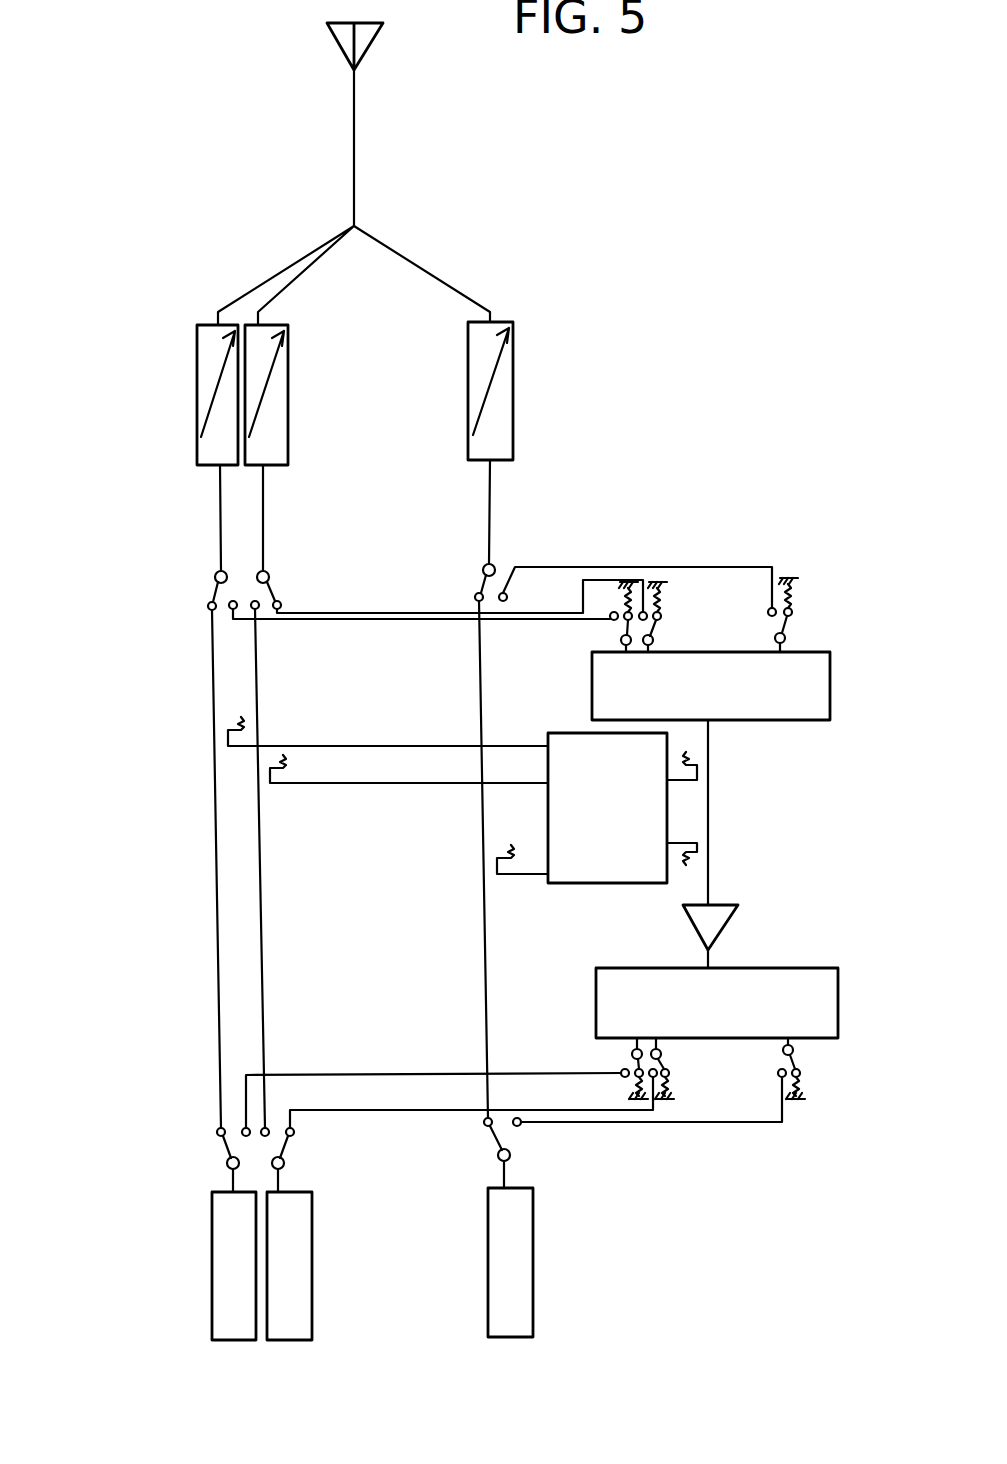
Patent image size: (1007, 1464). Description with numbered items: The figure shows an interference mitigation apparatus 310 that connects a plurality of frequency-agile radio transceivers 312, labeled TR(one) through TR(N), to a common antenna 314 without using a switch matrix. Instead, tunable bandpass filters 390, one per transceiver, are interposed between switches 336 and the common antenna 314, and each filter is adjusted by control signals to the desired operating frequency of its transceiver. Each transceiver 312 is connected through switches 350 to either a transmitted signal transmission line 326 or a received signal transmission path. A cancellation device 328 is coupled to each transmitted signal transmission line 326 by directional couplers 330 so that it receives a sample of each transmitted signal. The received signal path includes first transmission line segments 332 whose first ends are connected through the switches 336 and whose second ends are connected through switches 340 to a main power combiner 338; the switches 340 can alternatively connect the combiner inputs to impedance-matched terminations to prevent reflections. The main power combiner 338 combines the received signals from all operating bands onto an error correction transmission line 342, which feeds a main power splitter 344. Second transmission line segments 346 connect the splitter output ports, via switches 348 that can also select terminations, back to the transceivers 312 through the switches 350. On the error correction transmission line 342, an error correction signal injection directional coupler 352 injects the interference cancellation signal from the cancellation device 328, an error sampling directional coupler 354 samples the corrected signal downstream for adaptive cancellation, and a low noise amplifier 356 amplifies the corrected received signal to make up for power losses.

The interference mitigation apparatus 310 is at (140, 696).
The frequency-agile radio transceivers 312 is at (212, 1260).
The common antenna 314 is at (370, 48).
The transmitted signal transmission lines 326 is at (257, 920).
The cancellation device 328 is at (605, 883).
The directional couplers 330 is at (268, 781).
The first transmission line segments 332 is at (690, 567).
The switches 336 is at (215, 579).
The main power combiner 338 is at (592, 687).
The switches 340 is at (620, 640).
The error correction transmission line 342 is at (708, 808).
The main power splitter 344 is at (596, 1003).
The second transmission line segments 346 is at (371, 1110).
The switches 348 is at (632, 1054).
The switches 350 is at (227, 1163).
The error correction signal injection directional coupler 352 is at (708, 765).
The error sampling directional coupler 354 is at (697, 852).
The low noise amplifier 356 is at (728, 925).
The tunable bandpass filters 390 is at (197, 393).